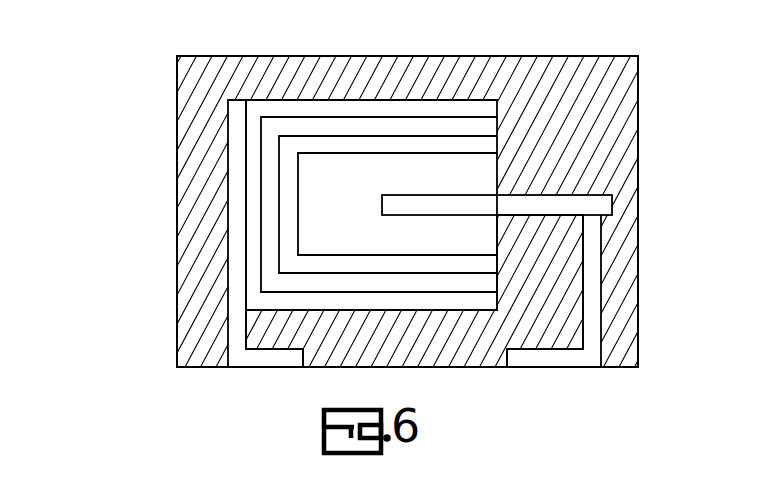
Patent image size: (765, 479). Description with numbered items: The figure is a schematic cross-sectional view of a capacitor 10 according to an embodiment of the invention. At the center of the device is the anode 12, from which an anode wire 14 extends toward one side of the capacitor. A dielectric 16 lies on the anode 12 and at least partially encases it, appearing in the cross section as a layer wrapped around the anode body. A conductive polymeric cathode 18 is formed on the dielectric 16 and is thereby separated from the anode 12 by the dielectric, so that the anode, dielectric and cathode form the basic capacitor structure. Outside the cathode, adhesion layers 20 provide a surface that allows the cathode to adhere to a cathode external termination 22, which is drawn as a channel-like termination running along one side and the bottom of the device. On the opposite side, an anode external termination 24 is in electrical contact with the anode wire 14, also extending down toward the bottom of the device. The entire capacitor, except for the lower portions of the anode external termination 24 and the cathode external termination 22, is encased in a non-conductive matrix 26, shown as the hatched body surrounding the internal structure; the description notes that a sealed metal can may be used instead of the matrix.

The capacitor 10 is at (382, 194).
The anode 12 is at (355, 215).
The anode wire 14 is at (597, 210).
The dielectric 16 is at (393, 147).
The conductive polymeric cathode 18 is at (348, 127).
The adhesion layers 20 is at (252, 147).
The cathode external termination 22 is at (230, 318).
The anode external termination 24 is at (590, 357).
The non-conductive matrix 26 is at (250, 56).